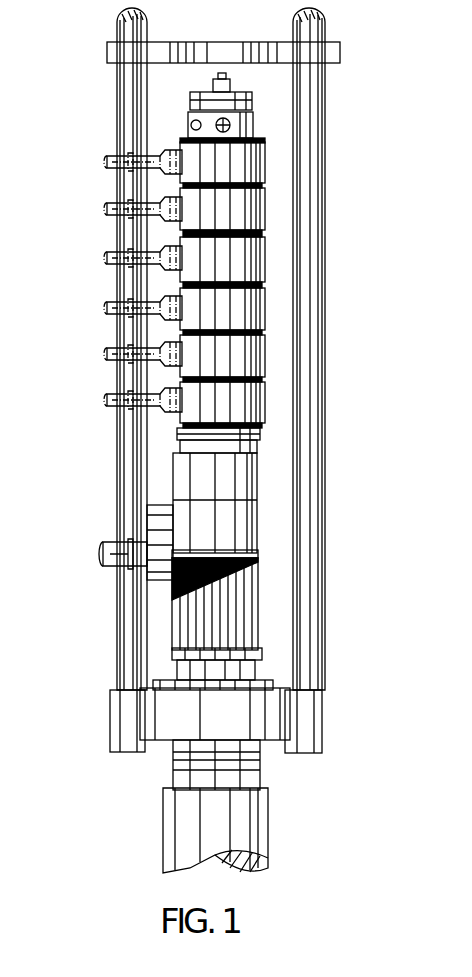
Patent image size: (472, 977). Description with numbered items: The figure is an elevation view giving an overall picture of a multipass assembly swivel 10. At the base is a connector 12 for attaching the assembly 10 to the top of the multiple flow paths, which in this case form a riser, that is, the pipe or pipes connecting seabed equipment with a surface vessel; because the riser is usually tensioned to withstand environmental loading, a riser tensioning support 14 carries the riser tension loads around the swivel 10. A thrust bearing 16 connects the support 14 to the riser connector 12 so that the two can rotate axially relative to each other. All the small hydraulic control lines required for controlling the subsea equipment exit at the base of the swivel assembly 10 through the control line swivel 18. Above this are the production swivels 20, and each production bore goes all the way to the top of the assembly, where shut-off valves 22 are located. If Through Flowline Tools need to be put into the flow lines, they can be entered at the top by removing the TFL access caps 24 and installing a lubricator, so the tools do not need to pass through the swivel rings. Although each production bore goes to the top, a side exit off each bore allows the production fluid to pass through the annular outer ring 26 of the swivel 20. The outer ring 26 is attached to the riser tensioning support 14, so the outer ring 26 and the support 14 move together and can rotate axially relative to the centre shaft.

The multipass assembly swivel 10 is at (70, 227).
The connector 12 is at (250, 825).
The riser tensioning support 14 is at (315, 440).
The thrust bearing 16 is at (262, 717).
The control line swivel 18 is at (257, 580).
The production swivels 20 is at (243, 207).
The shut-off valves 22 is at (253, 132).
The TFL access caps 24 is at (252, 93).
The annular outer ring 26 is at (240, 256).